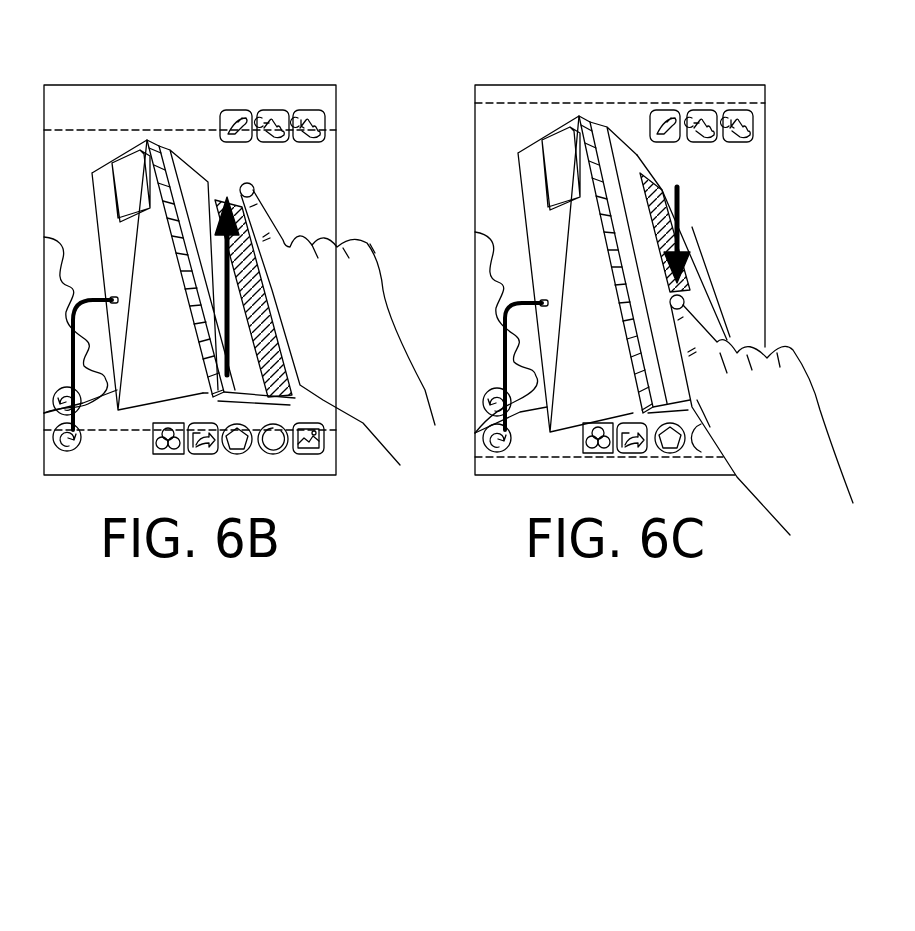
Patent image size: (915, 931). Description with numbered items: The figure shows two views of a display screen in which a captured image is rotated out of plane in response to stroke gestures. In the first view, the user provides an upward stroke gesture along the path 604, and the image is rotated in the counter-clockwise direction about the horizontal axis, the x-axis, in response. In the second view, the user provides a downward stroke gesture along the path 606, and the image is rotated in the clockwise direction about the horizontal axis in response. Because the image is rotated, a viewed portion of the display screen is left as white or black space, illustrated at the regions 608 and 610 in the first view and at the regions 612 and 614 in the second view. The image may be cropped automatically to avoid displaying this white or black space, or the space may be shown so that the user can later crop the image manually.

In FIG. 6B, the upward stroke gesture path 604 is at (224, 282).
In FIG. 6C, the downward stroke gesture path 606 is at (678, 200).
In FIG. 6B, the white or black space 608 is at (67, 100).
In FIG. 6B, the white or black space 610 is at (67, 460).
In FIG. 6C, the white or black space 612 is at (500, 95).
In FIG. 6C, the white or black space 614 is at (500, 465).